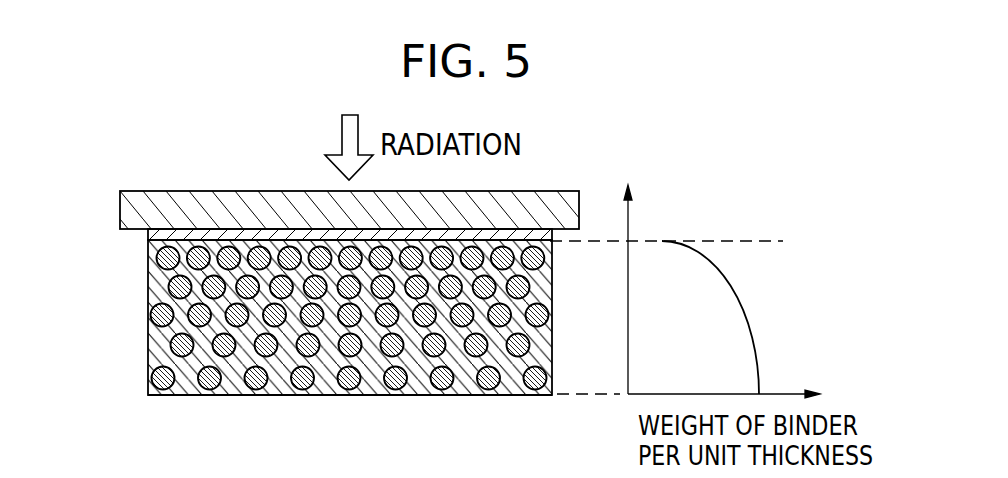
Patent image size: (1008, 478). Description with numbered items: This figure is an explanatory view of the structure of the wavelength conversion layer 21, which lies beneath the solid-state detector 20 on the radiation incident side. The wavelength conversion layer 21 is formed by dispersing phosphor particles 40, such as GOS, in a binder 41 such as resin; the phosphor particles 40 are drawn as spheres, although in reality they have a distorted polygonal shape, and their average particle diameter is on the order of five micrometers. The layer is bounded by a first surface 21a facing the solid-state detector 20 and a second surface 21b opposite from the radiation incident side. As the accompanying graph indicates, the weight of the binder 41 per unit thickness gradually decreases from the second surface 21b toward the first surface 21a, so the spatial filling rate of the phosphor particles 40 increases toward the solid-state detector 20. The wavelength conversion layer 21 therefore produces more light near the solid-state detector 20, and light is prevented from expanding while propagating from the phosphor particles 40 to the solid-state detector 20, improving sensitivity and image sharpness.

The solid-state detector 20 is at (120, 207).
The wavelength conversion layer 21 is at (339, 342).
The first surface 21a is at (537, 233).
The second surface 21b is at (544, 397).
The phosphor particles 40 is at (156, 256).
The binder 41 is at (148, 292).